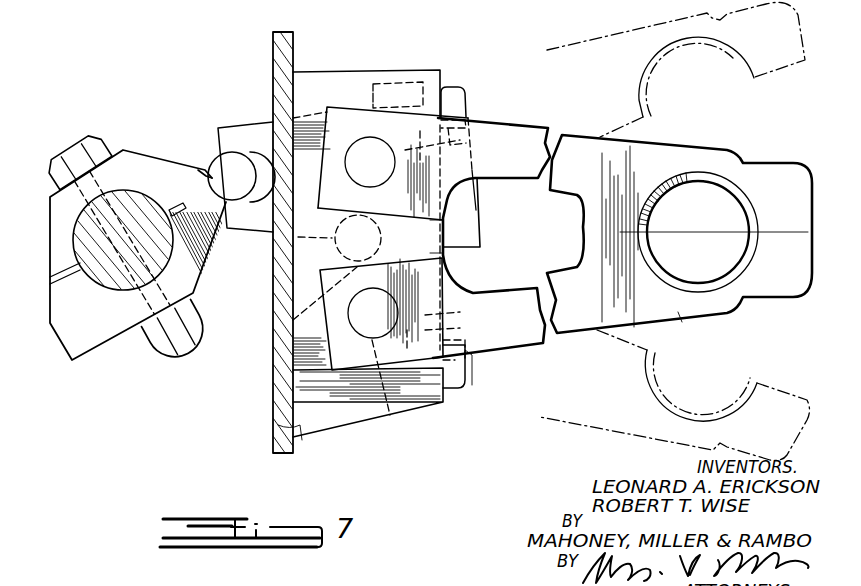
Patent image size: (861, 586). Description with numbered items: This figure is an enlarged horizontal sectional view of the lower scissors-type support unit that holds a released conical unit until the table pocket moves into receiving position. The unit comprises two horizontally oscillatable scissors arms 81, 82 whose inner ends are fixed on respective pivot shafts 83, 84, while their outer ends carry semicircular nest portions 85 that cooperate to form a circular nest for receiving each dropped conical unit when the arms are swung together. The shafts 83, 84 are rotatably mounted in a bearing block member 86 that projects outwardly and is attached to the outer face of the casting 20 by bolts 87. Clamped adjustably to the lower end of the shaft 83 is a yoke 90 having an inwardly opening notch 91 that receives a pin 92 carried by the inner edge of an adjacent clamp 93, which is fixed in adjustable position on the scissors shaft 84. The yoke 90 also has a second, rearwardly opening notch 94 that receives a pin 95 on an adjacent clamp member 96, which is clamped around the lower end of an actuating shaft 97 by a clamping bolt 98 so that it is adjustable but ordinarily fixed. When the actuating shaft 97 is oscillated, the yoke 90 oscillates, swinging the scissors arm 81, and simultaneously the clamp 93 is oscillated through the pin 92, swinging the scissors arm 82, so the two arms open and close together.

The casting 20 is at (295, 48).
The scissors arm 81 is at (658, 145).
The scissors arm 82 is at (680, 326).
The pivot shaft 83 is at (370, 145).
The pivot shaft 84 is at (362, 322).
The semicircular nest portion 85 is at (731, 55).
The bearing block member 86 is at (350, 92).
The bolt 87 is at (455, 86).
The yoke 90 is at (270, 127).
The inwardly opening notch 91 is at (368, 214).
The pin 92 is at (334, 225).
The clamp 93 is at (300, 418).
The rearwardly opening notch 94 is at (246, 150).
The pin 95 is at (218, 165).
The clamp member 96 is at (140, 170).
The actuating shaft 97 is at (113, 290).
The clamping bolt 98 is at (75, 140).